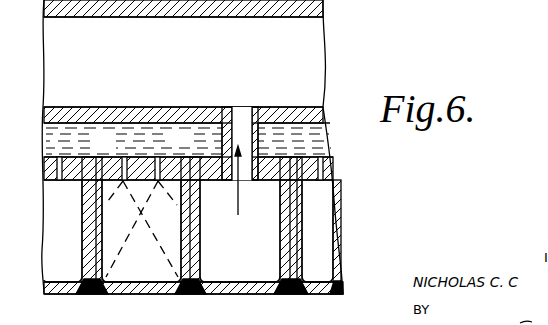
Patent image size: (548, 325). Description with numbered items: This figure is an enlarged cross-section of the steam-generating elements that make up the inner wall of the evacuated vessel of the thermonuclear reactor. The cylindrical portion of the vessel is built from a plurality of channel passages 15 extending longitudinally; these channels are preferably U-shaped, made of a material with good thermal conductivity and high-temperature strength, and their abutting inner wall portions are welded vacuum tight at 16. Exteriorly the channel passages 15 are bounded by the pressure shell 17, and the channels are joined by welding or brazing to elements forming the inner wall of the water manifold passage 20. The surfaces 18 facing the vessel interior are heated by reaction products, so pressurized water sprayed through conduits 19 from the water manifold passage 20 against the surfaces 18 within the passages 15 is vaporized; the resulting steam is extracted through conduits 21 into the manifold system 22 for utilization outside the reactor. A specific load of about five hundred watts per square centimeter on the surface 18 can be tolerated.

The channel passage 15 is at (248, 257).
The vacuum-tight weld 16 is at (289, 294).
The pressure shell 17 is at (100, 107).
The surface 18 is at (145, 294).
The conduit 19 is at (158, 168).
The water manifold passage 20 is at (113, 150).
The conduit 21 is at (258, 140).
The manifold system 22 is at (190, 65).